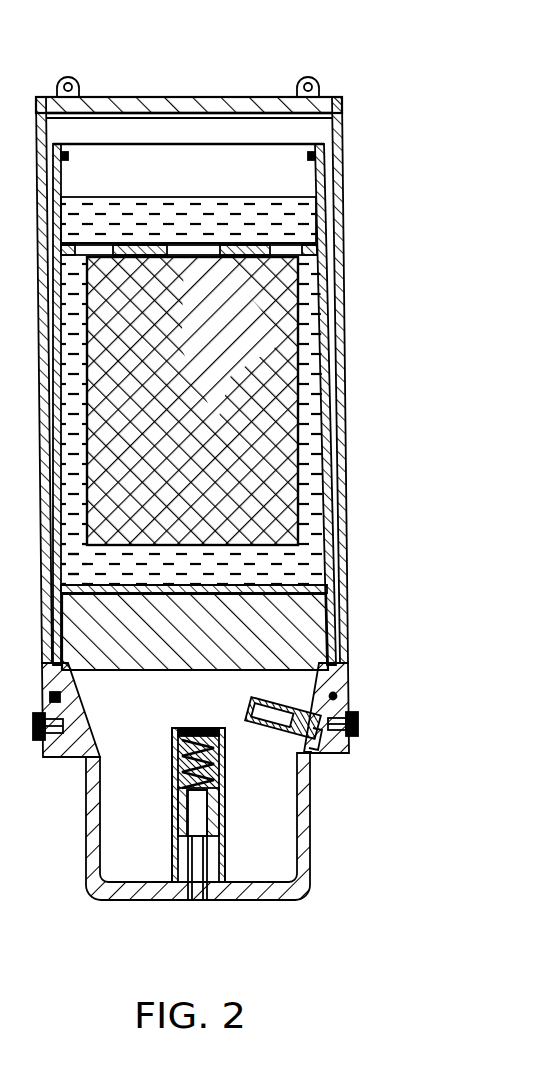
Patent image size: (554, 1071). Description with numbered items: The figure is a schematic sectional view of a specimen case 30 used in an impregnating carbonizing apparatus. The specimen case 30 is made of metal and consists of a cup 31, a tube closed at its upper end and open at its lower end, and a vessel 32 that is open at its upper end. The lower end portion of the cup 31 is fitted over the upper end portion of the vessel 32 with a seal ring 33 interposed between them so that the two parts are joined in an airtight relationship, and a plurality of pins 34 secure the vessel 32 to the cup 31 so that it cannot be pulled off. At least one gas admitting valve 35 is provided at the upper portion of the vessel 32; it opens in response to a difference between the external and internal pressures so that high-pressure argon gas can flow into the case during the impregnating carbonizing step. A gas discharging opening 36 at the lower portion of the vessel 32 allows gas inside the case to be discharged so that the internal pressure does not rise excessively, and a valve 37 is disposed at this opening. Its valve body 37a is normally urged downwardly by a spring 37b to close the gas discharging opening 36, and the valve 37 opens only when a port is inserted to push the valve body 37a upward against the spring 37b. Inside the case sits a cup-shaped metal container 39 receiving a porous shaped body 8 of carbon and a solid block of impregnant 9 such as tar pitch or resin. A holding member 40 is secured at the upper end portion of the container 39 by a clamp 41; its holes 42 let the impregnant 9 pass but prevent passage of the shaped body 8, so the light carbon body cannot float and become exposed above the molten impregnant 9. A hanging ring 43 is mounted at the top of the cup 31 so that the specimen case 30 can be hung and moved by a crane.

The porous shaped body of carbon 8 is at (322, 458).
The solid block of impregnant 9 is at (340, 290).
The specimen case 30 is at (366, 403).
The cup 31 is at (347, 320).
The vessel 32 is at (311, 826).
The seal ring 33 is at (337, 697).
The pins 34 is at (346, 726).
The gas admitting valve 35 is at (286, 745).
The gas discharging opening 36 is at (199, 901).
The valve 37 is at (172, 792).
The valve body 37a is at (228, 806).
The spring 37b is at (173, 757).
The container 39 is at (347, 578).
The holding member 40 is at (243, 245).
The clamp 41 is at (338, 148).
The holes 42 is at (168, 245).
The hanging ring 43 is at (309, 75).